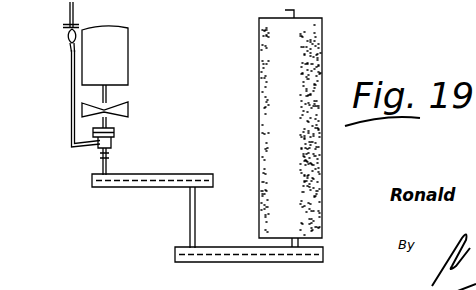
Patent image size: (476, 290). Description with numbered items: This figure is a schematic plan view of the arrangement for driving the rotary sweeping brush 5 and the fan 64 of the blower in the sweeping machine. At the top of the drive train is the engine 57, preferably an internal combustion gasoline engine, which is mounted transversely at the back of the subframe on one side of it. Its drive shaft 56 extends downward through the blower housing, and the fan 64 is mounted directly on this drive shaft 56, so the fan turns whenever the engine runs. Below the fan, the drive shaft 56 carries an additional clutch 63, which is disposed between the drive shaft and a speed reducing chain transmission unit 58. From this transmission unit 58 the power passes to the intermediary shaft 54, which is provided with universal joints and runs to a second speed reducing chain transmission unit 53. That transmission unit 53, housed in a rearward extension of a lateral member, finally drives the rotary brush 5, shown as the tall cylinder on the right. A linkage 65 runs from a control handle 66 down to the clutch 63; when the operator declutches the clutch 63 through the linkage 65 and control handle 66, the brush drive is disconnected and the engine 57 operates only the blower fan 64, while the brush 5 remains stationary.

The rotary sweeping brush 5 is at (290, 111).
The speed reducing chain transmission unit 53 is at (228, 243).
The intermediary shaft 54 is at (195, 212).
The drive shaft 56 is at (107, 95).
The engine 57 is at (122, 58).
The speed reducing chain transmission unit 58 is at (138, 172).
The clutch 63 is at (115, 135).
The fan 64 is at (123, 110).
The linkage 65 is at (72, 131).
The control handle 66 is at (77, 15).